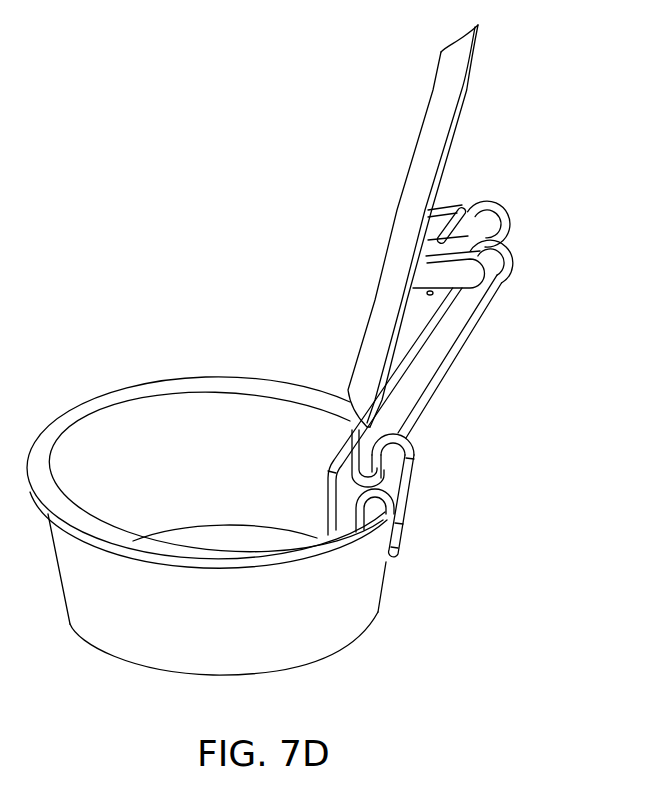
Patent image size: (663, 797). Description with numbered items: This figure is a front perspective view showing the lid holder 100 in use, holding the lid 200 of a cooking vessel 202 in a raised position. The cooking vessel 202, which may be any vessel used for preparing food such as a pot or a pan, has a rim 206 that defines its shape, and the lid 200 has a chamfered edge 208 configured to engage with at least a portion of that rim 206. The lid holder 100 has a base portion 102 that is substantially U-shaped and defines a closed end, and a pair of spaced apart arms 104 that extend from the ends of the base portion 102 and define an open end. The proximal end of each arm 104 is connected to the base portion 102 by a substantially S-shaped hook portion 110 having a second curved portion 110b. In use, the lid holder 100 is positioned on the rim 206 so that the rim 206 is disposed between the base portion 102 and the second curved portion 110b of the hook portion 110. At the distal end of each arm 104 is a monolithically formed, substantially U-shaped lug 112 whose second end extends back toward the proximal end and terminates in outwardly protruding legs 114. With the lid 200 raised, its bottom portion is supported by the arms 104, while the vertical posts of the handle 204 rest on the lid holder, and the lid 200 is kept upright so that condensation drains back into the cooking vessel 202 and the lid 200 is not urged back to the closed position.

The lid holder 100 is at (482, 363).
The base portion 102 is at (430, 537).
The spaced apart arms 104 is at (413, 388).
The hook portion 110 is at (376, 473).
The second curved portion 110b is at (412, 445).
The lug 112 is at (463, 207).
The legs 114 is at (476, 310).
The lid 200 is at (374, 172).
The cooking vessel 202 is at (345, 612).
The handle 204 is at (507, 294).
The rim 206 is at (198, 388).
The chamfered edge 208 is at (447, 97).